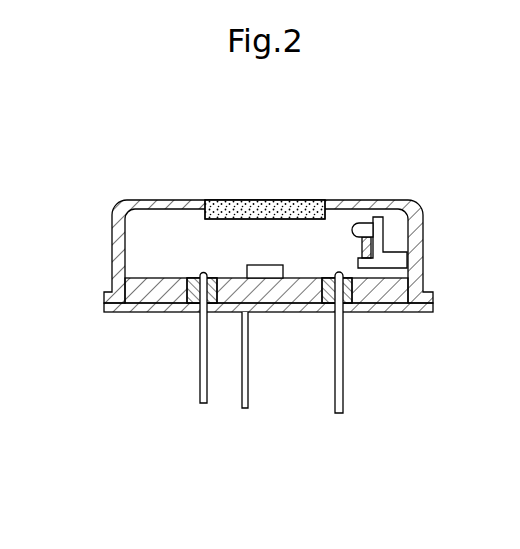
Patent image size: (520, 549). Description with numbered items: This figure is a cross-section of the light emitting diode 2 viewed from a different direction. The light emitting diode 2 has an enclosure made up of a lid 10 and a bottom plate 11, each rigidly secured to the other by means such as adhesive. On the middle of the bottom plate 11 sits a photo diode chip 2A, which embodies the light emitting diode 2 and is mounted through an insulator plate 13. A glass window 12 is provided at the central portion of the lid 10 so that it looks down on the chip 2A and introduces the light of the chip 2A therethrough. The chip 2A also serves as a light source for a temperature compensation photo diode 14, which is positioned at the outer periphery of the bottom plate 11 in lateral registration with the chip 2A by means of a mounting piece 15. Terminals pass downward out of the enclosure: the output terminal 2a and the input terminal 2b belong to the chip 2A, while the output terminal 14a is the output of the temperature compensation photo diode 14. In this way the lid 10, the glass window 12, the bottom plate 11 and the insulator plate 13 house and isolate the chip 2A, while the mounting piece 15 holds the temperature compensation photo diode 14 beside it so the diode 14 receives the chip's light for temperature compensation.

The light emitting diode 2 is at (170, 182).
The photo diode chip 2A is at (262, 270).
The output terminal 2a is at (200, 402).
The input terminal 2b is at (249, 395).
The lid 10 is at (120, 207).
The bottom plate 11 is at (127, 310).
The glass window 12 is at (272, 210).
The insulator plate 13 is at (378, 297).
The temperature compensation photo diode 14 is at (370, 217).
The output terminal 14a is at (333, 392).
The mounting piece 15 is at (378, 240).